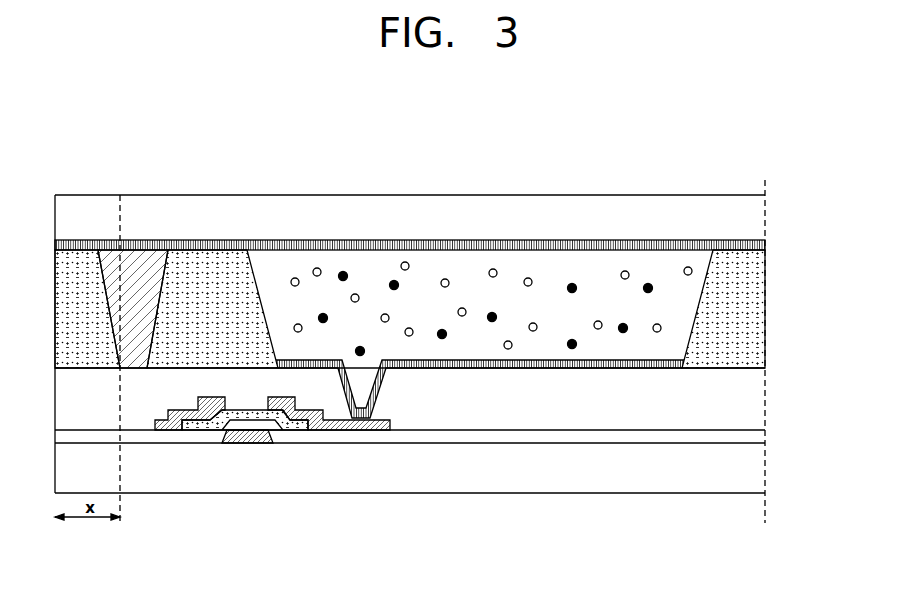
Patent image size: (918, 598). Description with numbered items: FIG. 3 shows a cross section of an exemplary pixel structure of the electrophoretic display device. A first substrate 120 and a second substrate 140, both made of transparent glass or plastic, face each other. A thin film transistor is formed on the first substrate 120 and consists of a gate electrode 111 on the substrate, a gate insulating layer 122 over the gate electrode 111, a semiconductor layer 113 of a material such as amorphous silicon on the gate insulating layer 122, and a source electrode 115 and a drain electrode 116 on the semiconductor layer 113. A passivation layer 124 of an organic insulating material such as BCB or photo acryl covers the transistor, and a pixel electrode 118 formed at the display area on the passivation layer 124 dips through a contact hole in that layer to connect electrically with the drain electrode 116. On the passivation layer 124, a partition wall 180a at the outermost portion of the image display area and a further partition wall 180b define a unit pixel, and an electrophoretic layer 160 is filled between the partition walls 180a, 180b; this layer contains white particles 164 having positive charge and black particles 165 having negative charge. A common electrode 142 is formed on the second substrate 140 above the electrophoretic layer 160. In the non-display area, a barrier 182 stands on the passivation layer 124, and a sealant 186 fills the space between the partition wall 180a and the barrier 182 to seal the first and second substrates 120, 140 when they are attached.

The gate electrode 111 is at (244, 441).
The semiconductor layer 113 is at (198, 433).
The source electrode 115 is at (155, 432).
The drain electrode 116 is at (345, 431).
The pixel electrode 118 is at (643, 358).
The first substrate 120 is at (752, 477).
The gate insulating layer 122 is at (752, 435).
The passivation layer 124 is at (752, 402).
The second substrate 140 is at (752, 214).
The common electrode 142 is at (752, 249).
The electrophoretic layer 160 is at (567, 266).
The white particles 164 is at (445, 279).
The black particles 165 is at (394, 281).
The partition wall 180a is at (213, 282).
The partition wall 180b is at (733, 282).
The barrier 182 is at (81, 281).
The sealant 186 is at (136, 282).